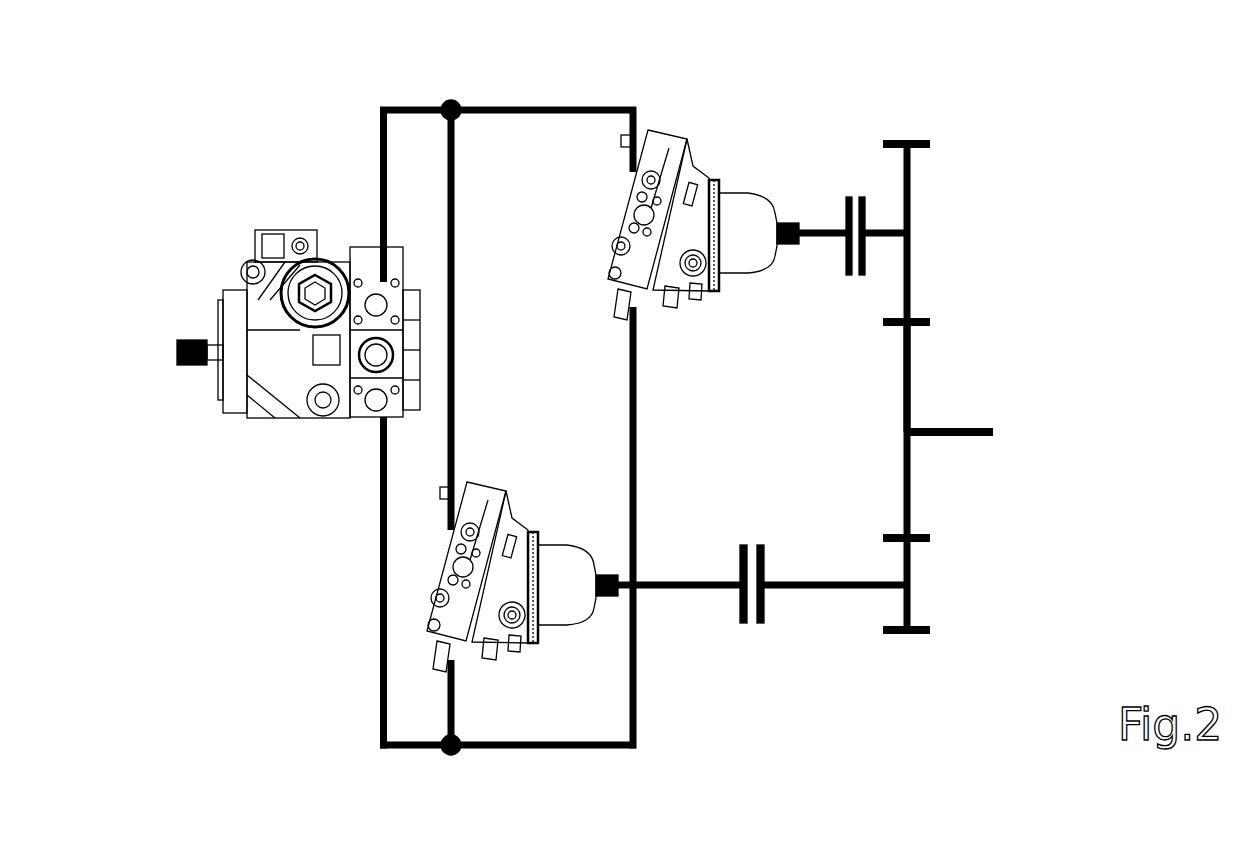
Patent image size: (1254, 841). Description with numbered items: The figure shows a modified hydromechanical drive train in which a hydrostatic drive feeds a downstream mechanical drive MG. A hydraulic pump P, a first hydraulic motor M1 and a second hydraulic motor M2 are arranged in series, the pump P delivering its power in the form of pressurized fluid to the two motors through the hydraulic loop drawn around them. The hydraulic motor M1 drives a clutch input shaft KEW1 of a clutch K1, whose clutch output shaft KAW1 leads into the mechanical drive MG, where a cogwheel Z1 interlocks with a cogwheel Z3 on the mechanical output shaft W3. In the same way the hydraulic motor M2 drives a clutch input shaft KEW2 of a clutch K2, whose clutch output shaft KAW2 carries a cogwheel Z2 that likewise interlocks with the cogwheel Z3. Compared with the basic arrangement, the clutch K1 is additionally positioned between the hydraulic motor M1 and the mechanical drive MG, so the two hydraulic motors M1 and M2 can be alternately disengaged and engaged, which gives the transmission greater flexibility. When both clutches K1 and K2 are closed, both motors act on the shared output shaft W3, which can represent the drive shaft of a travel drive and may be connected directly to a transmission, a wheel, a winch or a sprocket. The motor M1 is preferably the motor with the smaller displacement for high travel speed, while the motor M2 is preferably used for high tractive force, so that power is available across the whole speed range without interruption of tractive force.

The hydraulic pump P is at (283, 345).
The hydraulic motor M1 is at (733, 232).
The hydraulic motor M2 is at (565, 585).
The clutch K1 is at (858, 207).
The clutch K2 is at (763, 602).
The clutch input shaft KEW1 is at (827, 233).
The clutch input shaft KEW2 is at (655, 582).
The clutch output shaft KAW1 is at (890, 233).
The clutch output shaft KAW2 is at (848, 582).
The mechanical drive MG is at (963, 320).
The cogwheel Z1 is at (908, 191).
The cogwheel Z2 is at (909, 565).
The cogwheel Z3 is at (912, 373).
The mechanical output shaft W3 is at (963, 432).